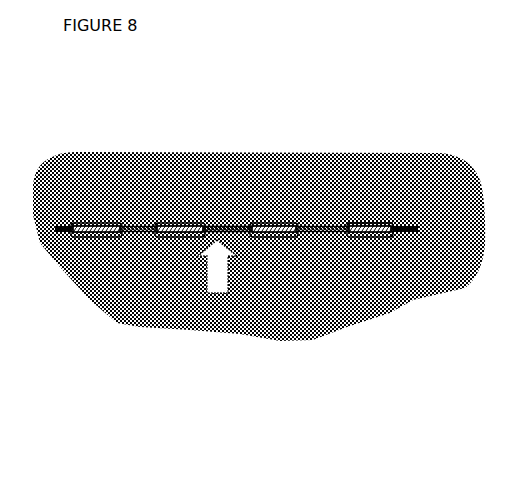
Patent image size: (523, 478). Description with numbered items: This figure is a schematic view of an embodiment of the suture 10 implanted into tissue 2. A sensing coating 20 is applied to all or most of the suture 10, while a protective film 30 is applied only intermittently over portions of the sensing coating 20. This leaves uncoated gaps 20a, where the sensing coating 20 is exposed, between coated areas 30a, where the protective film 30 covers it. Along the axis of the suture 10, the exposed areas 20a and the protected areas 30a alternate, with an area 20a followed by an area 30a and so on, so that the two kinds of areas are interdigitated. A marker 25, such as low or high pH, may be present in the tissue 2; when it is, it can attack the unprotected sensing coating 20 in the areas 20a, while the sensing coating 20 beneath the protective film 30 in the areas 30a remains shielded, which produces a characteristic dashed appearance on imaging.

The tissue 2 is at (119, 278).
The suture 10 is at (411, 225).
The sensing coating 20 is at (173, 221).
The uncoated gaps 20a is at (232, 216).
The marker 25 is at (213, 285).
The protective film 30 is at (100, 219).
The coated areas 30a is at (368, 212).